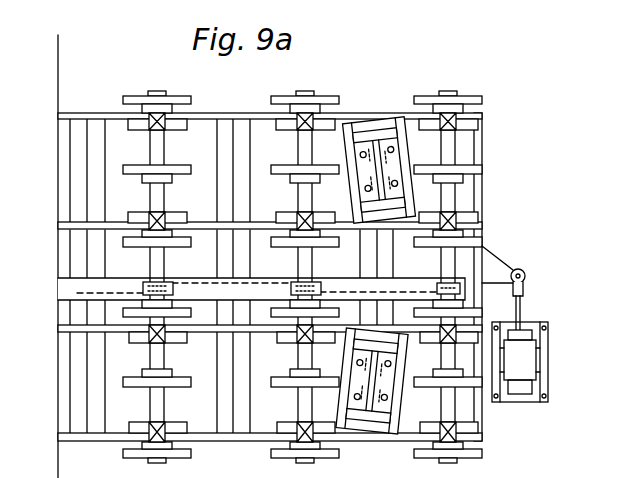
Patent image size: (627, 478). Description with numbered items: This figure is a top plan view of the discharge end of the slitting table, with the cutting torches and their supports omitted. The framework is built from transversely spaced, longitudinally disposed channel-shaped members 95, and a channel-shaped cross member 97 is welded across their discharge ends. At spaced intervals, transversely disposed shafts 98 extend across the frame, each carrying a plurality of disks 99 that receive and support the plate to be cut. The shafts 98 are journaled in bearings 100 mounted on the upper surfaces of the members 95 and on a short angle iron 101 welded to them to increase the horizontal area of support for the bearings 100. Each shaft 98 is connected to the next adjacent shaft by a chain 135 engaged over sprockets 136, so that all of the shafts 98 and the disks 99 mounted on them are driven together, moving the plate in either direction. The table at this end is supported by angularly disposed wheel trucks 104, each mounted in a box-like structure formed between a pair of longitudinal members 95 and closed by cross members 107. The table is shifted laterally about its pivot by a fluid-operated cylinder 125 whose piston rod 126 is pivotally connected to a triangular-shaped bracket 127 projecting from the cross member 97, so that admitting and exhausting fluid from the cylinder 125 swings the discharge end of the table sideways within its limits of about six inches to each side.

The channel-shaped members 95 is at (353, 116).
The channel-shaped cross member 97 is at (477, 197).
The shafts 98 is at (152, 155).
The disks 99 is at (271, 98).
The bearings 100 is at (153, 212).
The angle iron 101 is at (130, 121).
The wheel trucks 104 is at (386, 432).
The cross members 107 is at (386, 121).
The fluid-operated cylinder 125 is at (533, 365).
The piston rod 126 is at (520, 310).
The triangular-shaped bracket 127 is at (497, 265).
The chain 135 is at (77, 290).
The sprockets 136 is at (172, 283).